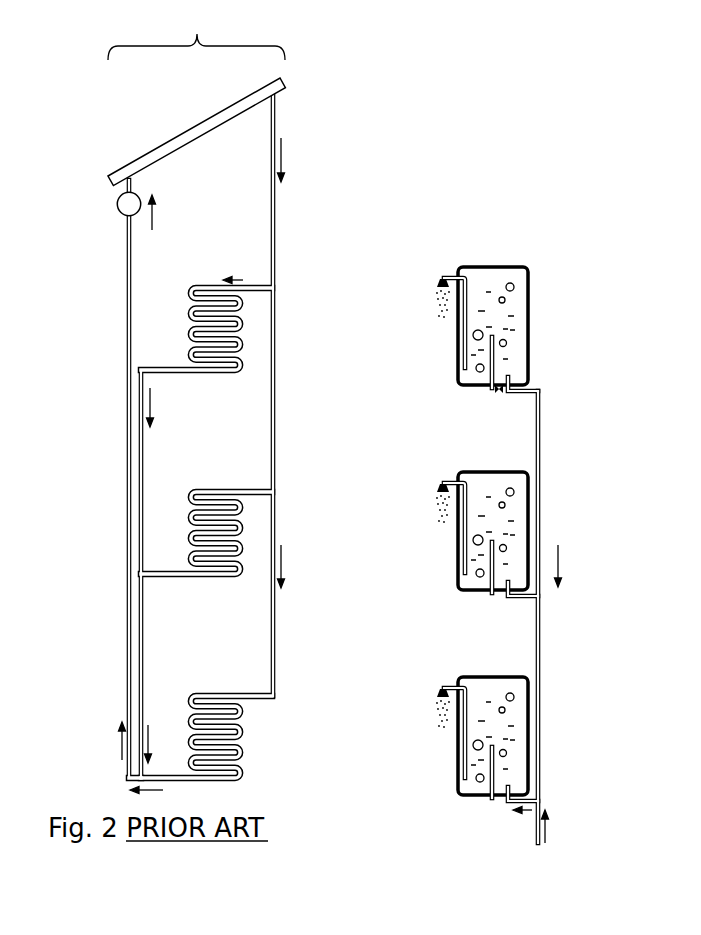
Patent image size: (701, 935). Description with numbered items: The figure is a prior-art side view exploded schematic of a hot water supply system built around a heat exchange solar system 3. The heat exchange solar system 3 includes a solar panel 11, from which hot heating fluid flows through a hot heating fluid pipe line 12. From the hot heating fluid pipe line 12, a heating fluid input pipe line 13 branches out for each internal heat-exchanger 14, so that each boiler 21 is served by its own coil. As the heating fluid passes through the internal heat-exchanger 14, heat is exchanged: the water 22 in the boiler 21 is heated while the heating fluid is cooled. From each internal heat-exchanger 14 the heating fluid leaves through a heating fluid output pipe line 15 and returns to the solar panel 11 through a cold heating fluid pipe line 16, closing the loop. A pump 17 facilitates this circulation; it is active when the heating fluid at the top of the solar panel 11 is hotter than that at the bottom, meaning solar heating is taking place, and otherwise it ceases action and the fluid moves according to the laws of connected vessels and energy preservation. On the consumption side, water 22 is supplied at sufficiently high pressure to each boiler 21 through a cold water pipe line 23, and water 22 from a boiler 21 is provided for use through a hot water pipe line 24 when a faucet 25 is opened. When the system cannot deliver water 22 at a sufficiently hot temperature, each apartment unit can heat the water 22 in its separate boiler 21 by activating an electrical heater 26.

The heat exchange solar system 3 is at (196, 35).
The solar panel 11 is at (178, 134).
The hot heating fluid pipe line 12 is at (276, 257).
The heating fluid input pipe line 13 is at (260, 285).
The internal heat-exchanger 14 is at (181, 286).
The heating fluid output pipe line 15 is at (152, 373).
The cold heating fluid pipe line 16 is at (127, 496).
The pump 17 is at (128, 204).
The boiler 21 is at (528, 282).
The water 22 is at (512, 335).
The cold water pipe line 23 is at (544, 610).
The hot water pipe line 24 is at (432, 272).
The faucet 25 is at (451, 276).
The electrical heater 26 is at (489, 386).